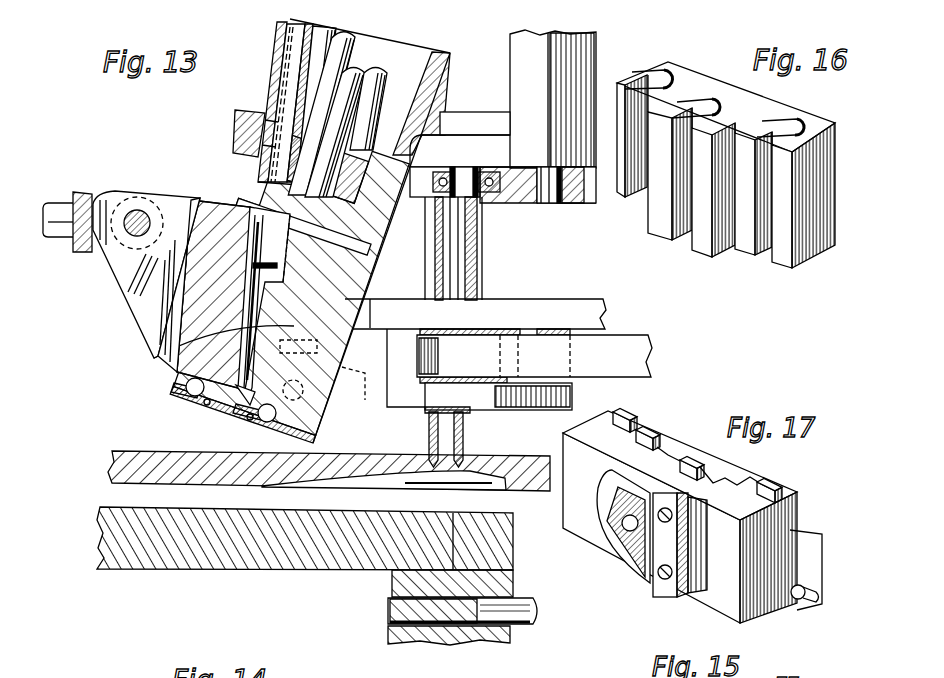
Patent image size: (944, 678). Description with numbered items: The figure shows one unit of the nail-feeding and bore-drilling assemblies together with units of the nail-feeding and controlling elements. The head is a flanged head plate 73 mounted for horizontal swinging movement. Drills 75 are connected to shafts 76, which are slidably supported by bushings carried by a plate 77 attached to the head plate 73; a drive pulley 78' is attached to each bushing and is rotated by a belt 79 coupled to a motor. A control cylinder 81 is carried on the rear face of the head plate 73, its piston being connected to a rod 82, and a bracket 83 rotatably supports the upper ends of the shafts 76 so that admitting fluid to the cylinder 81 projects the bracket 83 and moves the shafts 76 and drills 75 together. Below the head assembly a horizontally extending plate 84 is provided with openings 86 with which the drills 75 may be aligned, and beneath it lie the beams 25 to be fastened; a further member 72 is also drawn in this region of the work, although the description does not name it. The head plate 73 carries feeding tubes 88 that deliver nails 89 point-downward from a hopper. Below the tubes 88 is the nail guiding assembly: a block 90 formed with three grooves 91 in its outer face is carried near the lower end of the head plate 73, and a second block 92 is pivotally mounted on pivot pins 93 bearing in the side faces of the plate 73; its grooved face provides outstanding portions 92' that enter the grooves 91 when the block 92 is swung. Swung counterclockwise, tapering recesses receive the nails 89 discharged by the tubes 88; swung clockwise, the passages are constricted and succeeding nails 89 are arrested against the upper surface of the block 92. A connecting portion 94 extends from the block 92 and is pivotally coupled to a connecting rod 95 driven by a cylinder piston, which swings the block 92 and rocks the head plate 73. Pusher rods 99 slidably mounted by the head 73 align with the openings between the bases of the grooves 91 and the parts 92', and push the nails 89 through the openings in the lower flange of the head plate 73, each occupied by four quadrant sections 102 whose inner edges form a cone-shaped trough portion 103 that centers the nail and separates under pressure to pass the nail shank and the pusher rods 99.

In FIG. 13, the beams 25 is at (400, 636).
In FIG. 13, the rod 72 is at (522, 603).
In FIG. 13, the head plate 73 is at (440, 75).
In FIG. 13, the drills 75 is at (465, 433).
In FIG. 13, the shafts 76 is at (480, 272).
In FIG. 13, the plate 77 is at (577, 307).
In FIG. 13, the drive pulley 78' is at (495, 329).
In FIG. 13, the belt 79 is at (627, 340).
In FIG. 13, the control cylinder 81 is at (578, 56).
In FIG. 13, the rod 82 is at (548, 206).
In FIG. 13, the bracket 83 is at (511, 199).
In FIG. 13, the horizontally extending plate 84 is at (133, 450).
In FIG. 13, the openings 86 is at (473, 480).
In FIG. 13, the feeding tubes 88 is at (276, 77).
In FIG. 13, the nails 89 is at (203, 343).
In FIG. 13, the block 90 is at (340, 267).
In FIG. 16, the block 90 is at (702, 80).
In FIG. 16, the grooves 91 is at (650, 75).
In FIG. 13, the second block 92 is at (213, 277).
In FIG. 17, the second block 92 is at (692, 517).
In FIG. 17, the outstanding portions 92' is at (717, 450).
In FIG. 13, the pivot pins 93 is at (307, 402).
In FIG. 17, the pivot pins 93 is at (817, 603).
In FIG. 13, the connecting portion 94 is at (133, 192).
In FIG. 17, the connecting portion 94 is at (640, 553).
In FIG. 13, the connecting rods 95 is at (56, 200).
In FIG. 13, the pusher rods 99 is at (352, 70).
In FIG. 13, the quadrant sections 102 is at (190, 400).
In FIG. 13, the cone-shaped trough portion 103 is at (241, 410).